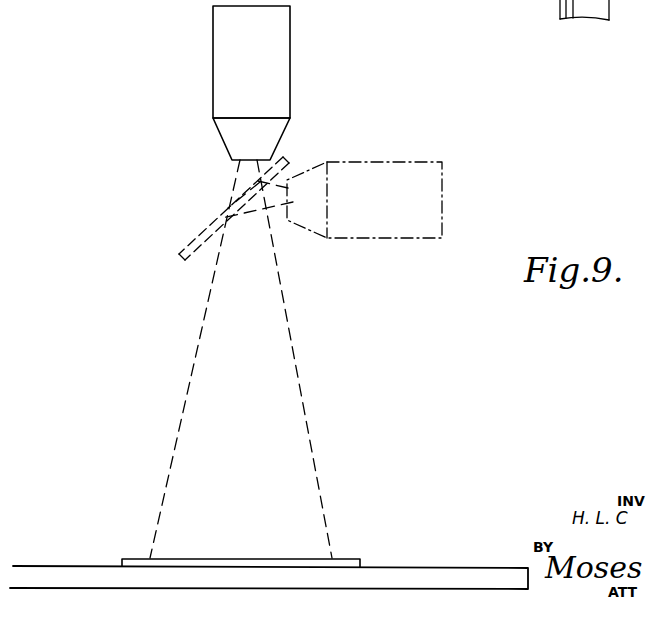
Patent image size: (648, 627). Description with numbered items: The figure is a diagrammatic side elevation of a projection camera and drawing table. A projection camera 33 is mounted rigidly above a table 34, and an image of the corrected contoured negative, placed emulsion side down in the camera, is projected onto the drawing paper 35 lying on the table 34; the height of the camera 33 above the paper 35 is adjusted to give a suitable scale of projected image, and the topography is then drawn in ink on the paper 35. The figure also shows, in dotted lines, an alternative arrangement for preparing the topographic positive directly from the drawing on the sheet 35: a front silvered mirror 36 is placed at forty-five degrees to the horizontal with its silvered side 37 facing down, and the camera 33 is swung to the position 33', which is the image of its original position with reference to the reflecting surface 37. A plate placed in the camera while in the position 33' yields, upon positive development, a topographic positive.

The projection camera 33 is at (277, 83).
The camera position 33' is at (397, 200).
The table 34 is at (452, 580).
The drawing paper 35 is at (362, 558).
The front silvered mirror 36 is at (208, 225).
The silvered side 37 is at (199, 250).